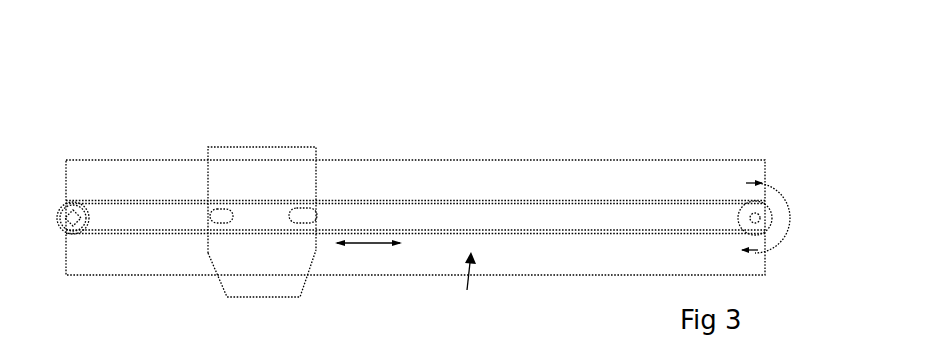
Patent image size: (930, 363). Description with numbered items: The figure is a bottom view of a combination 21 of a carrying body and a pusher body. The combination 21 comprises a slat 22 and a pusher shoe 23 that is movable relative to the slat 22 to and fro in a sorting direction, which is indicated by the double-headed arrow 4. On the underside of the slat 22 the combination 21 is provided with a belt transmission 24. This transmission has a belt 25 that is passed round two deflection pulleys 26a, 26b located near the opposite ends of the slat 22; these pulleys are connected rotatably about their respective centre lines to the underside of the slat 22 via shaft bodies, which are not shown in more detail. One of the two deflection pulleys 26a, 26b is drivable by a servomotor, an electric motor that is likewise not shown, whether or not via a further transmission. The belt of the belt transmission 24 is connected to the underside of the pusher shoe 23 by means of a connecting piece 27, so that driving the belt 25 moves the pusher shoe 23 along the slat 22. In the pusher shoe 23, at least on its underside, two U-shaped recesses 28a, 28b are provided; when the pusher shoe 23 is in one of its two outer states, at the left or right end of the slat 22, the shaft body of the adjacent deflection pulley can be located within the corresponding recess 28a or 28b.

The combination 21 is at (692, 102).
The slat 22 is at (445, 178).
The pusher shoe 23 is at (228, 162).
The belt transmission 24 is at (467, 290).
The belt 25 is at (582, 200).
The deflection pulley 26a is at (78, 222).
The deflection pulley 26b is at (752, 215).
The connecting piece 27 is at (259, 238).
The U-shaped recess 28a is at (222, 218).
The U-shaped recess 28b is at (307, 218).
The double-headed arrow 4 is at (368, 247).